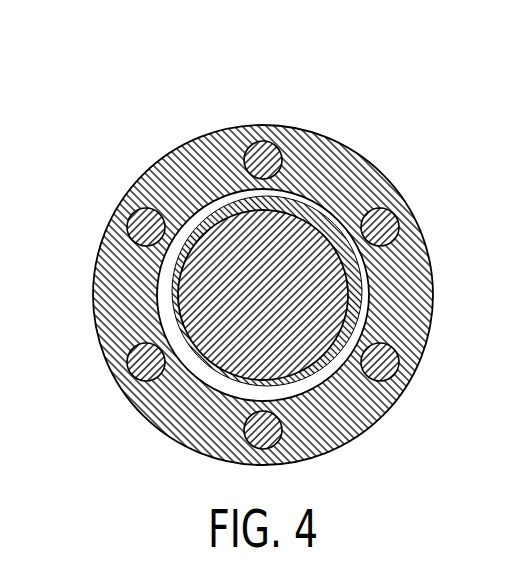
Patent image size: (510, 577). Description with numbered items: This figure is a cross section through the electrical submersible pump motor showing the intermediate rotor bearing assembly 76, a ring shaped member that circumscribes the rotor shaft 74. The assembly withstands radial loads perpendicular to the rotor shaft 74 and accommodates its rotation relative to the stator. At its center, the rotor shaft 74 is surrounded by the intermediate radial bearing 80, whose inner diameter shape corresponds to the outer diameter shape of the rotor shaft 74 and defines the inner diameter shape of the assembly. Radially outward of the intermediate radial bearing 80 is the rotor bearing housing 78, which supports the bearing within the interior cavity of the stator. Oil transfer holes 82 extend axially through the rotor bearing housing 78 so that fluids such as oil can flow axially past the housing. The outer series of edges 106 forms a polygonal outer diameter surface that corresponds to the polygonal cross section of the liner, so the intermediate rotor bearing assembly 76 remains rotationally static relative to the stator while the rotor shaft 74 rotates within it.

The intermediate rotor bearing assembly 76 is at (246, 257).
The rotor bearing housing 78 is at (166, 155).
The outer series of edges 106 is at (93, 294).
The rotor shaft 74 is at (330, 283).
The intermediate radial bearing 80 is at (302, 383).
The oil transfer holes 82 is at (147, 381).